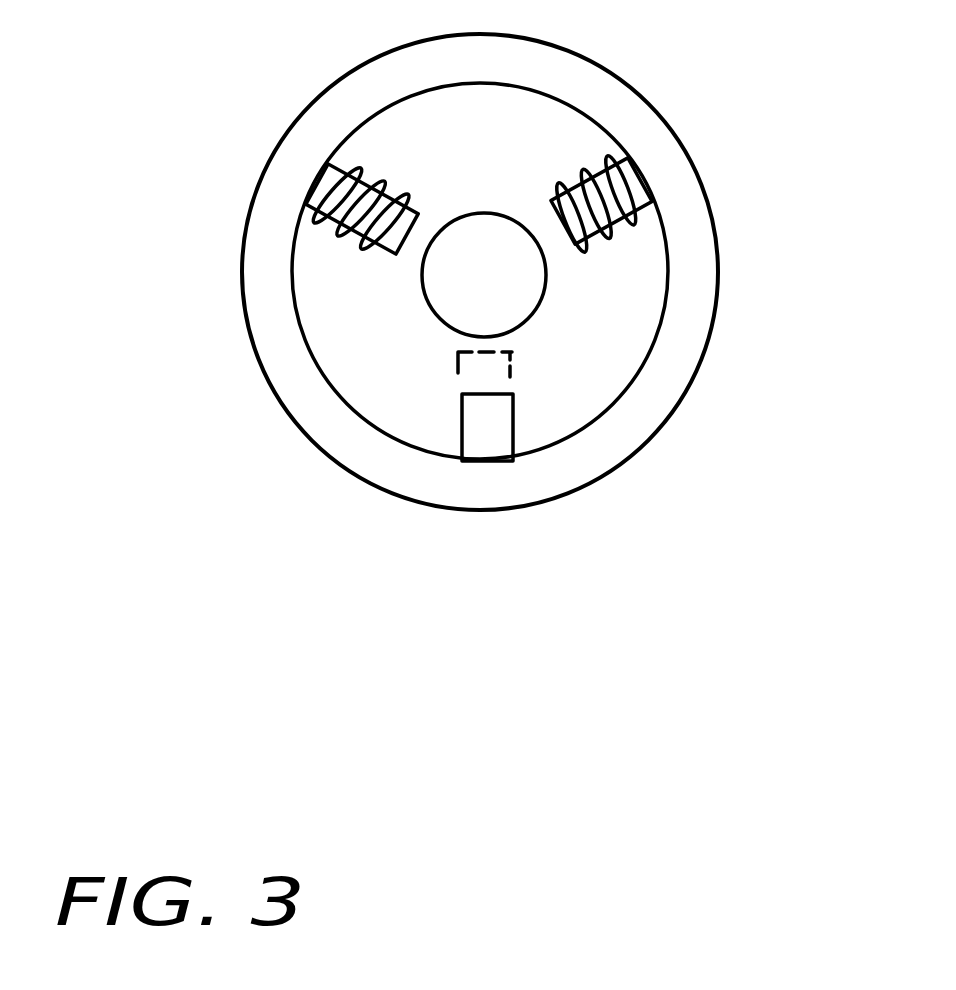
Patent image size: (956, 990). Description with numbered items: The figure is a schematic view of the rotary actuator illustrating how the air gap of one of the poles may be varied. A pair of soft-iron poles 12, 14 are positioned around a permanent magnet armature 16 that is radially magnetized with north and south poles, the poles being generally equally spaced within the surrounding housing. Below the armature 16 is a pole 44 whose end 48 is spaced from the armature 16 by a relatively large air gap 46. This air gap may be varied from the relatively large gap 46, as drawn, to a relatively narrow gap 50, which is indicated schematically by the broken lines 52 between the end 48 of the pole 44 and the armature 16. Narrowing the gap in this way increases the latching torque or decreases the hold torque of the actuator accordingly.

The pole 12 is at (330, 180).
The pole 14 is at (636, 183).
The armature 16 is at (458, 293).
The pole 44 is at (497, 432).
The air gap 46 is at (527, 362).
The end 48 is at (482, 394).
The narrow gap 50 is at (453, 342).
The broken lines 52 is at (515, 353).